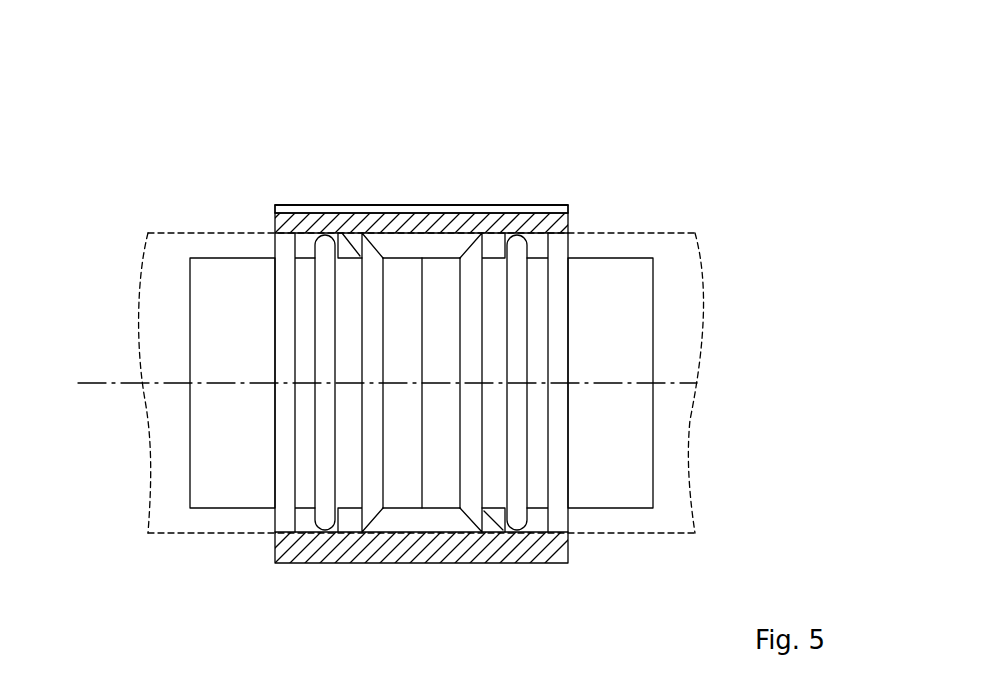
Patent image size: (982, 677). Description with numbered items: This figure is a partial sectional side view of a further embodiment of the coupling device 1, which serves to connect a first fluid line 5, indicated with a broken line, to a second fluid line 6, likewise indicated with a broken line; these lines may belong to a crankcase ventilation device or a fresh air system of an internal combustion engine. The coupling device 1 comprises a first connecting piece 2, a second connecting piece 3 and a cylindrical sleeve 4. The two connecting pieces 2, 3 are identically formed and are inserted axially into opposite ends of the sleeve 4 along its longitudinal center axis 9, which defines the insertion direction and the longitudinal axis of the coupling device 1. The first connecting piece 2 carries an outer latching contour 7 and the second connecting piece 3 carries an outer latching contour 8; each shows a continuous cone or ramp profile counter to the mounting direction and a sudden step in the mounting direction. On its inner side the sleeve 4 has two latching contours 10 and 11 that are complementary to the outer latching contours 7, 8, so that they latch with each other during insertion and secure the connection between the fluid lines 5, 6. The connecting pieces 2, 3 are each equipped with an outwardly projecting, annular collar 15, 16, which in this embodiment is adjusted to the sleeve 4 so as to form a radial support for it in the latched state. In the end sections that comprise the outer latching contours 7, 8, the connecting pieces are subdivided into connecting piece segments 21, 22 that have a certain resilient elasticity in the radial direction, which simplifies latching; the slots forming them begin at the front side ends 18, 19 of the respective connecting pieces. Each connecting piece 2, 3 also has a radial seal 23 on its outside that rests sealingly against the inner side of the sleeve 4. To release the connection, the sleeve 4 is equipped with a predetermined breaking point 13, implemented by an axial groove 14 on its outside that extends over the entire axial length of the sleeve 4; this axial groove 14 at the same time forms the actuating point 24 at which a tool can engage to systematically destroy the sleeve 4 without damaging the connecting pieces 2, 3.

The coupling device 1 is at (723, 223).
The first connecting piece 2 is at (225, 257).
The second connecting piece 3 is at (618, 256).
The sleeve 4 is at (300, 203).
The first fluid line 5 is at (153, 272).
The second fluid line 6 is at (685, 302).
The outer latching contour 7 is at (375, 512).
The outer latching contour 8 is at (472, 512).
The longitudinal center axis 9 is at (103, 387).
The latching contour 10 is at (357, 250).
The latching contour 11 is at (491, 520).
The predetermined breaking point 13 is at (508, 203).
The axial groove 14 is at (447, 162).
The actuating point 24 is at (545, 210).
The collar 15 is at (289, 522).
The collar 16 is at (563, 520).
The front side end 18 is at (423, 307).
The front side end 19 is at (422, 283).
The connecting piece segment 21 is at (400, 490).
The connecting piece segment 22 is at (445, 490).
The radial seal 23 is at (325, 525).